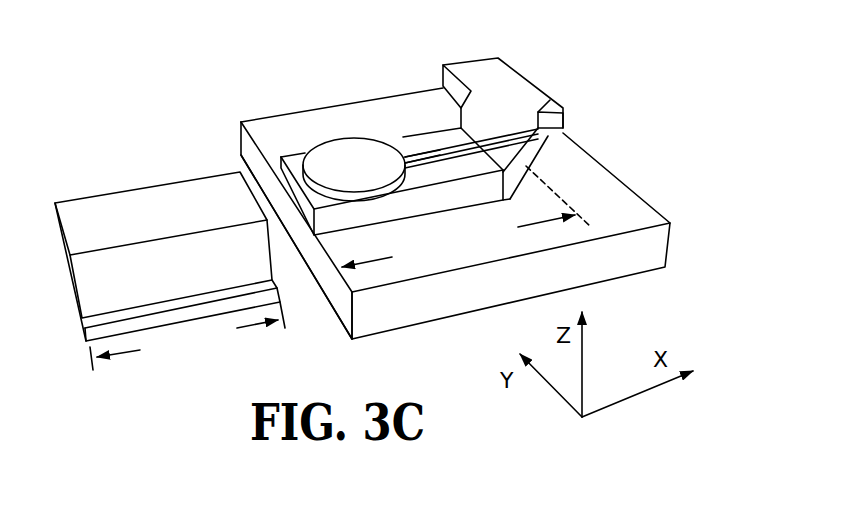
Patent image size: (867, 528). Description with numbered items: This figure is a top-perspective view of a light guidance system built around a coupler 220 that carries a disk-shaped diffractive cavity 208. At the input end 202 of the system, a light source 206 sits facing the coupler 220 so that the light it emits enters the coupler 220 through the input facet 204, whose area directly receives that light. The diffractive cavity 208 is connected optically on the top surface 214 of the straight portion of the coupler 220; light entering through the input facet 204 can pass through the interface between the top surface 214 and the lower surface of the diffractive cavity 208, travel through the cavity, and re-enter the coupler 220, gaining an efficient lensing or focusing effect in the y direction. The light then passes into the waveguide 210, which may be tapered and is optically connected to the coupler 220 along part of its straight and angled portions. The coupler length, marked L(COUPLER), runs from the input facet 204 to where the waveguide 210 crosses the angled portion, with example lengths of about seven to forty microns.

The input end 202 is at (295, 137).
The input facet 204 is at (303, 225).
The light source 206 is at (115, 207).
The diffractive cavity 208 is at (327, 158).
The waveguide 210 is at (566, 139).
The top surface 214 is at (412, 158).
The coupler 220 is at (520, 88).